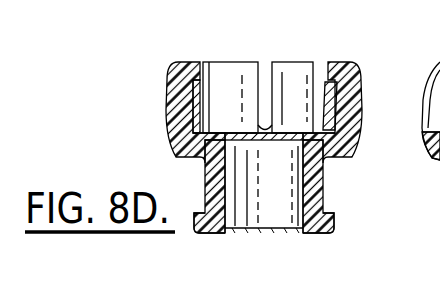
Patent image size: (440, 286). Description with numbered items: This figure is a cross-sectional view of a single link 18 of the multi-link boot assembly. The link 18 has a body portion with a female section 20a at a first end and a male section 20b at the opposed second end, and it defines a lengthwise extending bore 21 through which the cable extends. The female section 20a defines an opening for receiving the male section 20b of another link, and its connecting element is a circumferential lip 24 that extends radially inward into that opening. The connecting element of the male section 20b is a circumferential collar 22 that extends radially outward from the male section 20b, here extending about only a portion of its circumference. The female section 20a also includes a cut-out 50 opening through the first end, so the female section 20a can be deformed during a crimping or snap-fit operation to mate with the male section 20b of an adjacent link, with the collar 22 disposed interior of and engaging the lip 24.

The link 18 is at (279, 147).
The female section 20a is at (363, 88).
The male section 20b is at (325, 187).
The lengthwise extending bore 21 is at (282, 217).
The circumferential collar 22 is at (333, 214).
The circumferential lip 24 is at (332, 68).
The cut-out 50 is at (264, 80).